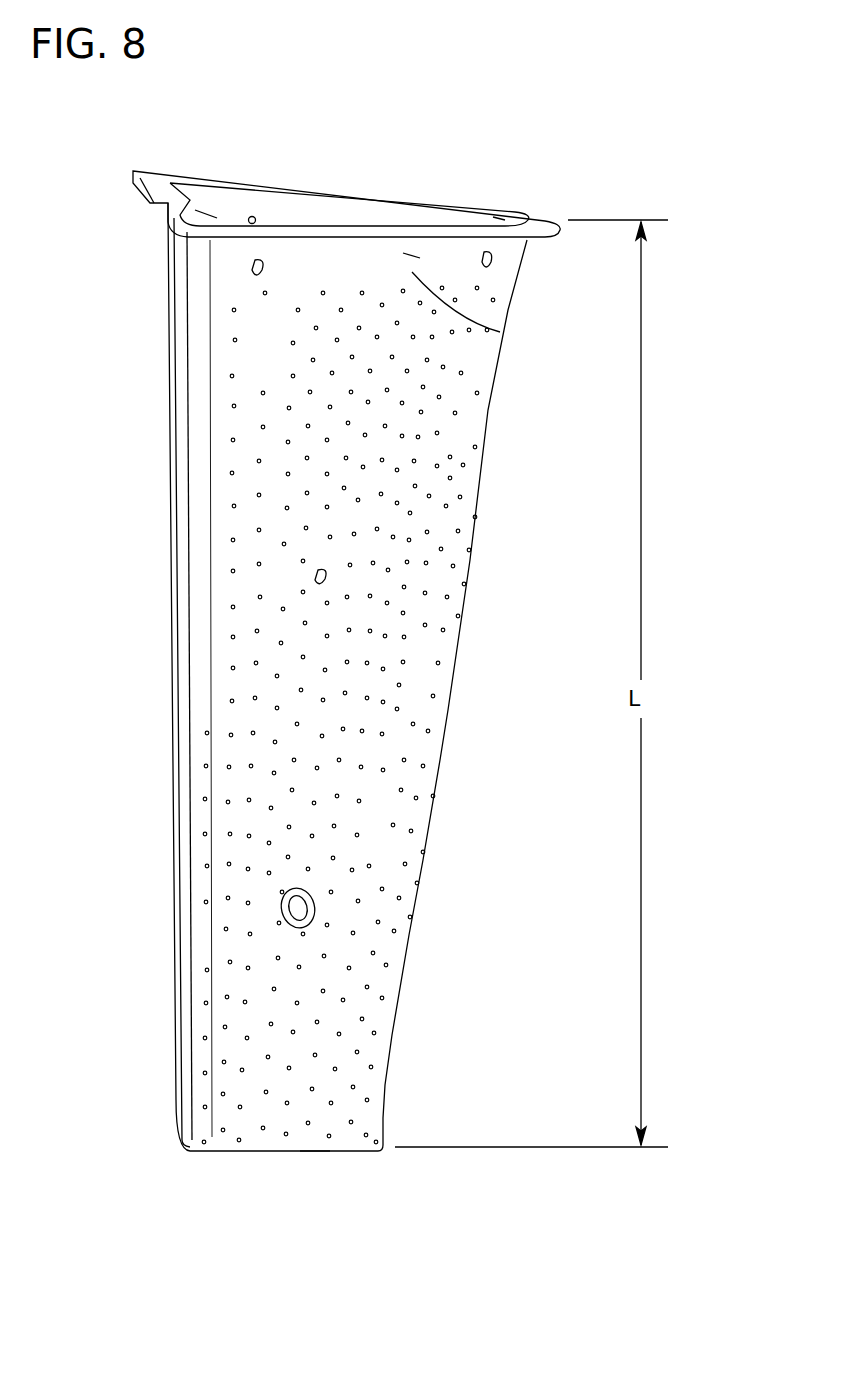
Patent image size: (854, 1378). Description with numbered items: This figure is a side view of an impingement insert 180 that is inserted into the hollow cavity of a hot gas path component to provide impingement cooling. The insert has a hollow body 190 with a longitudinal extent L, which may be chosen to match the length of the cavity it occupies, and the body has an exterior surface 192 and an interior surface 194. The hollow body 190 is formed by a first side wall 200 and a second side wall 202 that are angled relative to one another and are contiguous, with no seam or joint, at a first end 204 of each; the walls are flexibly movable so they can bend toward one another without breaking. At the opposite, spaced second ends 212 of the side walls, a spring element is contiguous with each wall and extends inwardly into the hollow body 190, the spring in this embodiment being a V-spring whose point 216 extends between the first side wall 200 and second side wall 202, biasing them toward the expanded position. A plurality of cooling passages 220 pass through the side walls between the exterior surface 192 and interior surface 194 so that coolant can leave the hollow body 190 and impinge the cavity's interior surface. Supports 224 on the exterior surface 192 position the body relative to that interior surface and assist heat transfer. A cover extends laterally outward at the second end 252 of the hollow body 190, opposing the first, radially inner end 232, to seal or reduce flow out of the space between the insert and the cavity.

The impingement insert 180 is at (645, 160).
The hollow body 190 is at (160, 300).
The exterior surface 192 is at (480, 368).
The interior surface 194 is at (320, 218).
The first side wall 200 is at (403, 253).
The second side wall 202 is at (270, 210).
The first end 204 is at (493, 217).
The second end 212 is at (183, 193).
The point 216 is at (203, 210).
The cooling passages 220 is at (487, 272).
The supports 224 is at (252, 268).
The first, radially inner end 232 is at (312, 1152).
The second end 252 is at (500, 332).